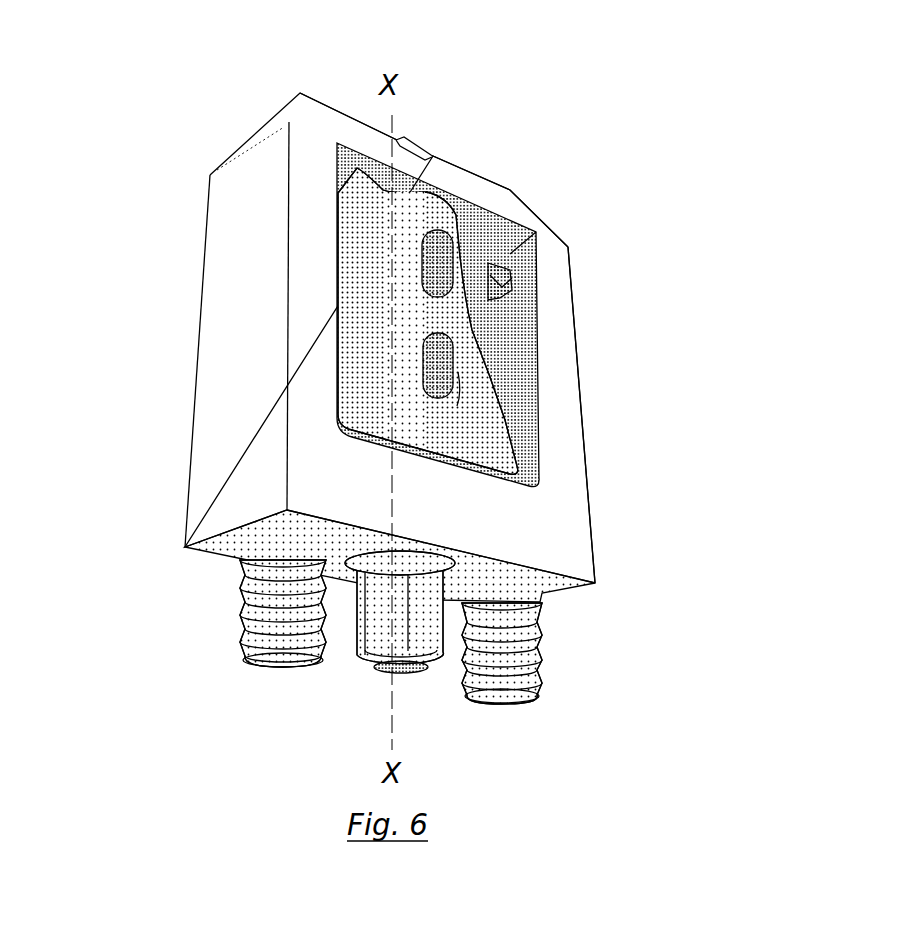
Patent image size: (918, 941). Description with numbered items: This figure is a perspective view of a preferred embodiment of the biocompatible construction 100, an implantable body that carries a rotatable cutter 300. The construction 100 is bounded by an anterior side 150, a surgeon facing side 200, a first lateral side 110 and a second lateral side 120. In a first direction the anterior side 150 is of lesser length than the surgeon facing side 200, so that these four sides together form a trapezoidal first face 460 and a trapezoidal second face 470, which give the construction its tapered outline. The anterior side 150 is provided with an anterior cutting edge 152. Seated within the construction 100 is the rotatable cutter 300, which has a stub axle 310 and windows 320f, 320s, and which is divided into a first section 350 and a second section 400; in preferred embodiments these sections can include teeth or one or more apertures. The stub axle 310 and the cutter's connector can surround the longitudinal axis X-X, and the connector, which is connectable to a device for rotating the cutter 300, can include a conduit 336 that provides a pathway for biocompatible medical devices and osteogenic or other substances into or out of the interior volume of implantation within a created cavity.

The biocompatible construction 100 is at (478, 338).
The first lateral side 110 is at (167, 334).
The second lateral side 120 is at (641, 415).
The anterior side 150 is at (306, 93).
The anterior cutting edge 152 is at (558, 178).
The surgeon facing side 200 is at (322, 666).
The rotatable cutter 300 is at (495, 321).
The stub axle 310 is at (493, 117).
The first window 320f is at (540, 263).
The second window 320s is at (539, 361).
The conduit 336 is at (467, 654).
The first section 350 is at (213, 313).
The second section 400 is at (525, 318).
The trapezoidal first face 460 is at (449, 556).
The trapezoidal second face 470 is at (128, 361).